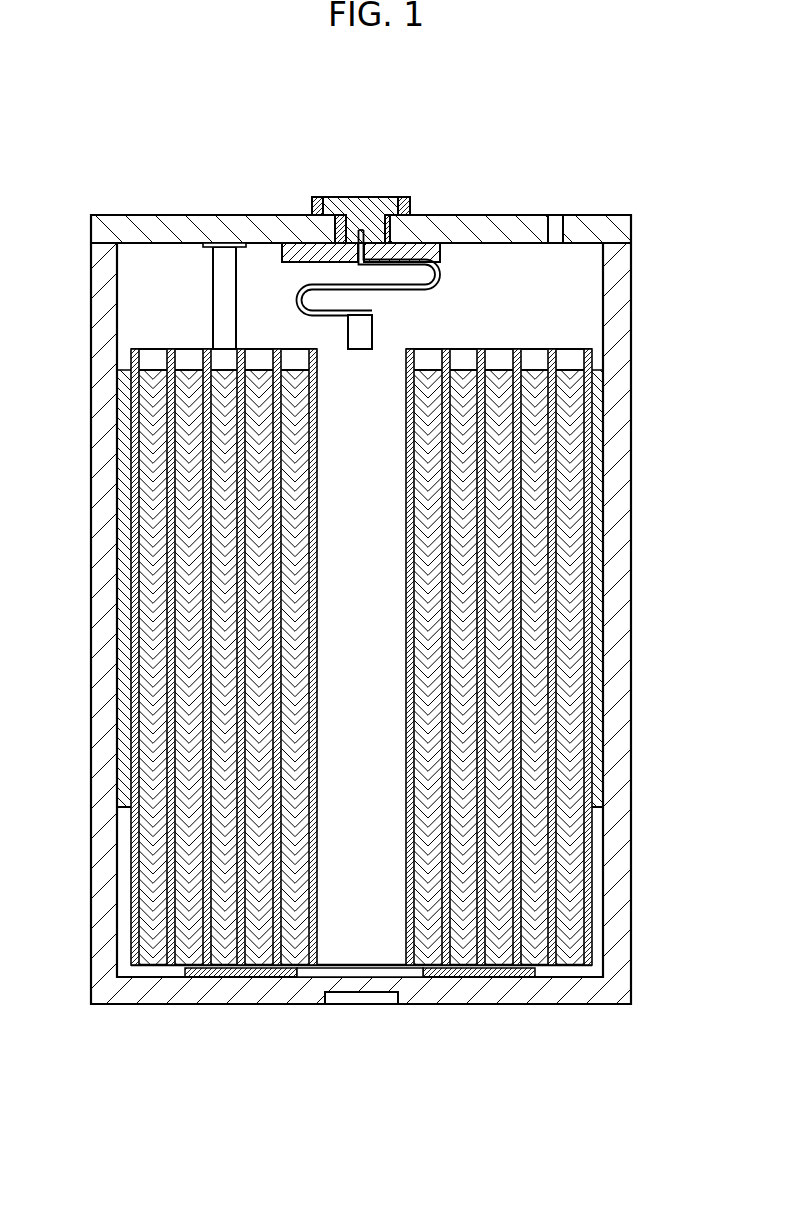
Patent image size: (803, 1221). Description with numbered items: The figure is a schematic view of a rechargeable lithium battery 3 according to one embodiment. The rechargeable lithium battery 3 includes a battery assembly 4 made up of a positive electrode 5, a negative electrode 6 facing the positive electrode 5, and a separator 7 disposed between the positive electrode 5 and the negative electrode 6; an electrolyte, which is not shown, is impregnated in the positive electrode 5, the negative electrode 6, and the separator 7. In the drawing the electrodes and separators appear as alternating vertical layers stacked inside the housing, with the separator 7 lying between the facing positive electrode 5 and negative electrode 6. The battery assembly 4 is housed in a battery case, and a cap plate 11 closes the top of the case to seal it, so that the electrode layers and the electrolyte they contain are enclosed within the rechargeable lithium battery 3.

The rechargeable lithium battery 3 is at (645, 372).
The electrode assembly 4 is at (496, 333).
The positive electrode 5 is at (107, 347).
The negative electrode 6 is at (192, 872).
The separator 7 is at (172, 923).
The cap plate 11 is at (474, 228).